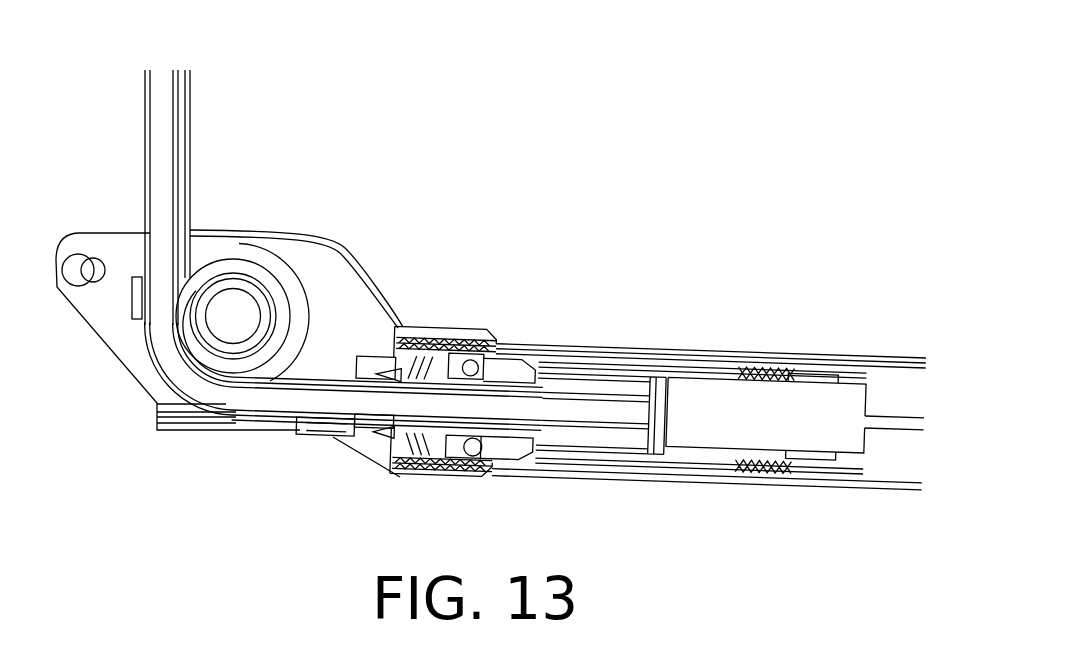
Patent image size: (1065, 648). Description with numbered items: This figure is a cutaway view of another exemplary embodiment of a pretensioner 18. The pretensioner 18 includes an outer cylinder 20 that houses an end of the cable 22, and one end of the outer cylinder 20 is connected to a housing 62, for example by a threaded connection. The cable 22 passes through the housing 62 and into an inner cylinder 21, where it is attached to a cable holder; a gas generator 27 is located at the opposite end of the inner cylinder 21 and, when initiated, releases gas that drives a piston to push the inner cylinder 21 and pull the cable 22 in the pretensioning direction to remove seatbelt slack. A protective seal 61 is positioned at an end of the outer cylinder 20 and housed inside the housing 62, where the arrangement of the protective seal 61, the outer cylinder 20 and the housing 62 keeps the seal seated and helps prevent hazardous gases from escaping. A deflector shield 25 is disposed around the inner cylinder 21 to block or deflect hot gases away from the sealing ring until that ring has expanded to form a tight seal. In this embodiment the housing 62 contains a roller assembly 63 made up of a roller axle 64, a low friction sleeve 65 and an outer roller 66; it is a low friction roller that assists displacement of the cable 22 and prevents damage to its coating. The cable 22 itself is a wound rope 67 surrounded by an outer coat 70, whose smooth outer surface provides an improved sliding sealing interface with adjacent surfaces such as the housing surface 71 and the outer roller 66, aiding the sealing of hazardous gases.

The pretensioner 18 is at (615, 110).
The outer cylinder 20 is at (668, 480).
The inner cylinder 21 is at (560, 362).
The cable 22 is at (131, 96).
The deflector shield 25 is at (748, 468).
The gas generator 27 is at (818, 412).
The protective seal 61 is at (382, 440).
The housing 62 is at (348, 275).
The roller assembly 63 is at (285, 240).
The roller axle 64 is at (234, 290).
The low friction sleeve 65 is at (223, 352).
The outer roller 66 is at (265, 362).
The rope 67 is at (160, 137).
The outer coat 70 is at (178, 70).
The housing surface 71 is at (315, 378).